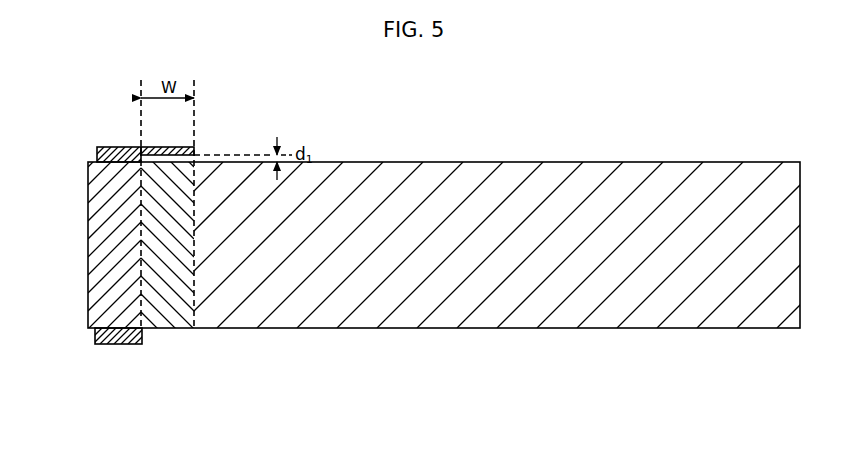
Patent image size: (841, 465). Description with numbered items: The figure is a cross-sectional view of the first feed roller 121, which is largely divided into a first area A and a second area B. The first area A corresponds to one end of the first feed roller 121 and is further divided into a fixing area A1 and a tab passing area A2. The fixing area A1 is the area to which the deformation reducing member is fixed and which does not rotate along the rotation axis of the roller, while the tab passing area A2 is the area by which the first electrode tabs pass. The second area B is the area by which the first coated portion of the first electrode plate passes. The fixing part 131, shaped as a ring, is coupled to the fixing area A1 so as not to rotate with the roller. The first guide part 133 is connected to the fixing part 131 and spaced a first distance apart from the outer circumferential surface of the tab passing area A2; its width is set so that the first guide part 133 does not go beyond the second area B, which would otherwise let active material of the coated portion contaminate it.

The first feed roller 121 is at (467, 172).
The fixing part 131 is at (97, 154).
The first guide part 133 is at (160, 145).
The fixing area A1 is at (117, 294).
The tab passing area A2 is at (172, 294).
The first area A is at (178, 402).
The second area B is at (417, 294).